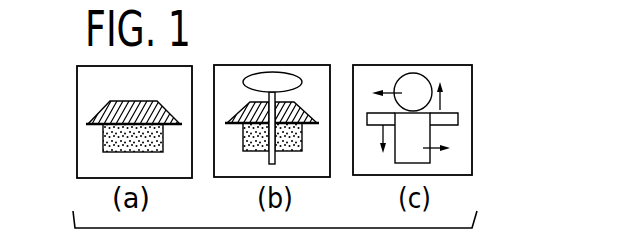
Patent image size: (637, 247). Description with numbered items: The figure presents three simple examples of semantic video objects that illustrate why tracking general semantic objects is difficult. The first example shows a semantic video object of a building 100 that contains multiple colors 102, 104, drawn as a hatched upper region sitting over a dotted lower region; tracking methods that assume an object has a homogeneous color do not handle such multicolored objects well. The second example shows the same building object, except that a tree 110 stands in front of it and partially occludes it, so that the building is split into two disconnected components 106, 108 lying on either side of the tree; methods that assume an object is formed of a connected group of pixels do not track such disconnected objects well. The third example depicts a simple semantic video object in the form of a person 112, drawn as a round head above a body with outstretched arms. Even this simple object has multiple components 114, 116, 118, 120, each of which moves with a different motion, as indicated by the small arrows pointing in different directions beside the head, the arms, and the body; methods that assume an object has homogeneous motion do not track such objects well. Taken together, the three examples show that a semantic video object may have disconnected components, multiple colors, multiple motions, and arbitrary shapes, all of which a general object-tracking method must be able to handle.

In FIG. 1A, the building 100 is at (102, 126).
In FIG. 1A, the color 102 is at (104, 107).
In FIG. 1A, the color 104 is at (103, 143).
In FIG. 1B, the disconnected component 106 is at (249, 165).
In FIG. 1B, the disconnected component 108 is at (296, 165).
In FIG. 1B, the tree 110 is at (268, 72).
In FIG. 1C, the person 112 is at (431, 65).
In FIG. 1C, the component 114 is at (407, 74).
In FIG. 1C, the component 116 is at (374, 126).
In FIG. 1C, the component 118 is at (425, 163).
In FIG. 1C, the component 120 is at (462, 118).